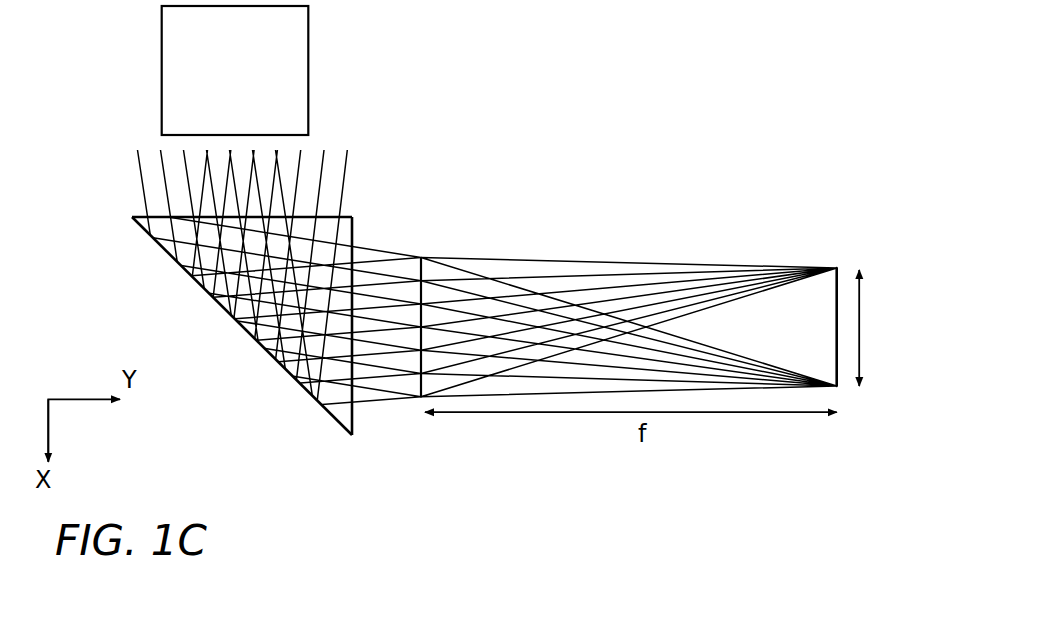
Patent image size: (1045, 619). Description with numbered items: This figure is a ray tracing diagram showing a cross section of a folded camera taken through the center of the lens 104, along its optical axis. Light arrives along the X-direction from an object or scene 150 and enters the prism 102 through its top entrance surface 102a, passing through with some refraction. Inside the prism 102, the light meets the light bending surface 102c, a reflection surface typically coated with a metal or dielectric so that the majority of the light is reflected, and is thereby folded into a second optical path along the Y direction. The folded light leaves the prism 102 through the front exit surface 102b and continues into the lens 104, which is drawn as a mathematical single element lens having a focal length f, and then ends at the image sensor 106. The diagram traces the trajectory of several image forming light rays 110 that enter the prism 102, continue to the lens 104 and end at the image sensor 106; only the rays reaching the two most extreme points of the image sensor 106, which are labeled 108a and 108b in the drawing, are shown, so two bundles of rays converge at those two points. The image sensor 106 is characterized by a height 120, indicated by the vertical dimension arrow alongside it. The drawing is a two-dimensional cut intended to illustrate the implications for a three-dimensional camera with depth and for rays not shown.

The prism 102 is at (281, 298).
The top (entrance) surface 102a is at (132, 217).
The front (exit) surface 102b is at (353, 232).
The light bending surface (reflection surface) 102c is at (332, 425).
The lens 104 is at (420, 400).
The image sensor 106 is at (837, 322).
The first focal point on sensor 108a is at (838, 266).
The second focal point on sensor 108b is at (837, 388).
The image forming light rays 110 is at (347, 150).
The height 120 is at (862, 318).
The object or scene 150 is at (258, 115).